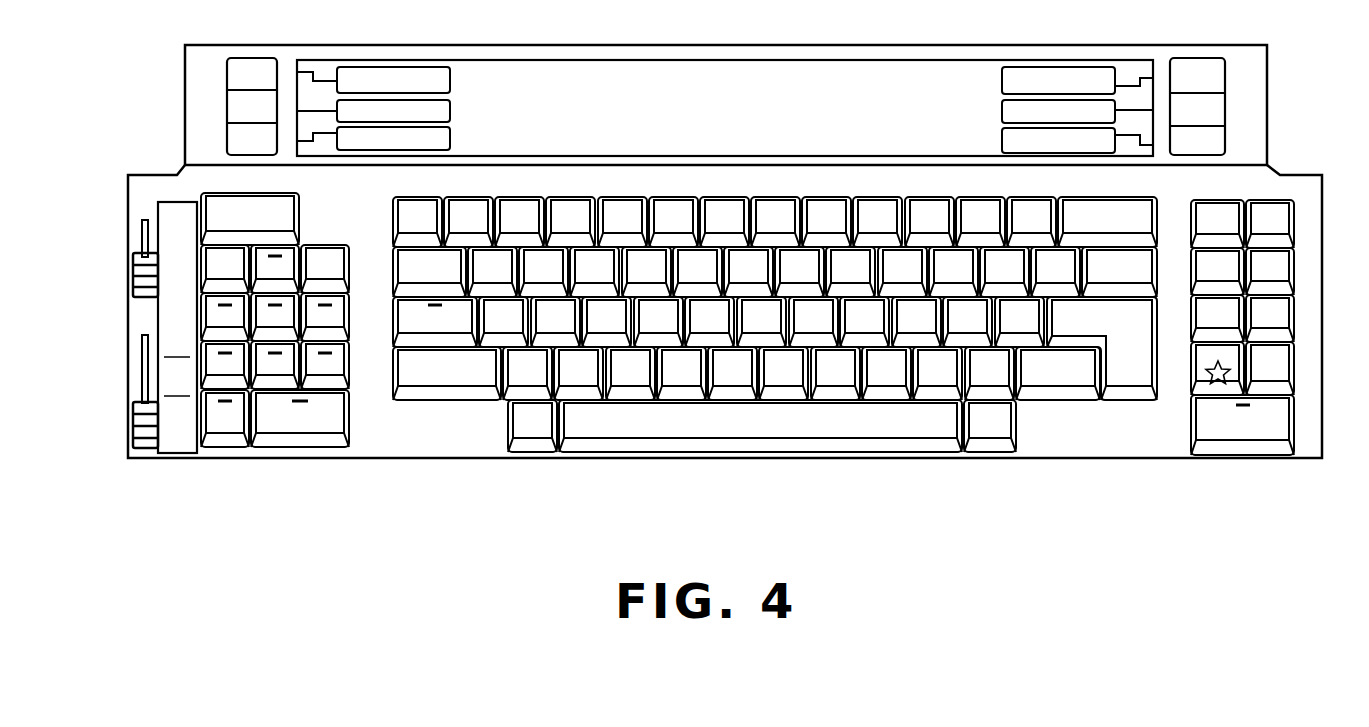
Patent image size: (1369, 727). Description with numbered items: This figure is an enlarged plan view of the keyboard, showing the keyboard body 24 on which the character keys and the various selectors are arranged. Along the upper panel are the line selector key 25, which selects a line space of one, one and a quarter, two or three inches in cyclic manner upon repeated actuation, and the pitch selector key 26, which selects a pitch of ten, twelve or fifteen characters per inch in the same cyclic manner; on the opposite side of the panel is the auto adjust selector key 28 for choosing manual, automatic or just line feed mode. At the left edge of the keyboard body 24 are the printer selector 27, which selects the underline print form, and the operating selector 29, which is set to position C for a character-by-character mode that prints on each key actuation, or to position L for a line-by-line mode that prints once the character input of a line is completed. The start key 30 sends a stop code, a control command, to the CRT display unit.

The keyboard body 24 is at (762, 460).
The line selector key 25 is at (227, 106).
The pitch selector key 26 is at (227, 76).
The printer selector 27 is at (133, 422).
The auto adjust selector key 28 is at (1225, 117).
The operating selector 29 is at (133, 277).
The start key 30 is at (1203, 377).